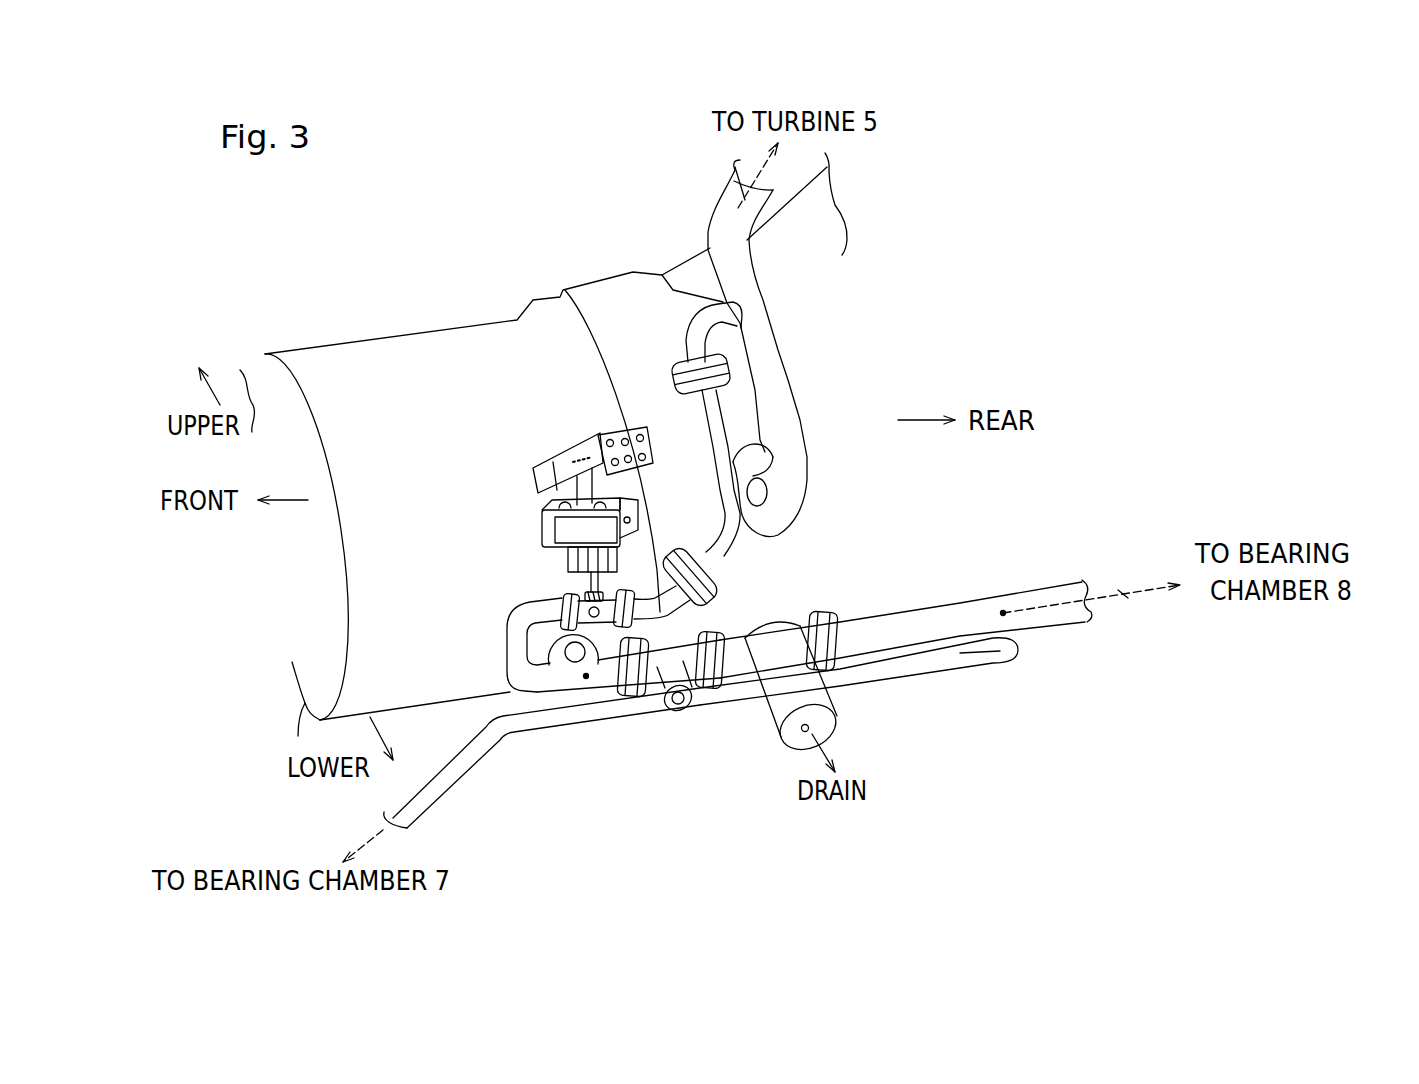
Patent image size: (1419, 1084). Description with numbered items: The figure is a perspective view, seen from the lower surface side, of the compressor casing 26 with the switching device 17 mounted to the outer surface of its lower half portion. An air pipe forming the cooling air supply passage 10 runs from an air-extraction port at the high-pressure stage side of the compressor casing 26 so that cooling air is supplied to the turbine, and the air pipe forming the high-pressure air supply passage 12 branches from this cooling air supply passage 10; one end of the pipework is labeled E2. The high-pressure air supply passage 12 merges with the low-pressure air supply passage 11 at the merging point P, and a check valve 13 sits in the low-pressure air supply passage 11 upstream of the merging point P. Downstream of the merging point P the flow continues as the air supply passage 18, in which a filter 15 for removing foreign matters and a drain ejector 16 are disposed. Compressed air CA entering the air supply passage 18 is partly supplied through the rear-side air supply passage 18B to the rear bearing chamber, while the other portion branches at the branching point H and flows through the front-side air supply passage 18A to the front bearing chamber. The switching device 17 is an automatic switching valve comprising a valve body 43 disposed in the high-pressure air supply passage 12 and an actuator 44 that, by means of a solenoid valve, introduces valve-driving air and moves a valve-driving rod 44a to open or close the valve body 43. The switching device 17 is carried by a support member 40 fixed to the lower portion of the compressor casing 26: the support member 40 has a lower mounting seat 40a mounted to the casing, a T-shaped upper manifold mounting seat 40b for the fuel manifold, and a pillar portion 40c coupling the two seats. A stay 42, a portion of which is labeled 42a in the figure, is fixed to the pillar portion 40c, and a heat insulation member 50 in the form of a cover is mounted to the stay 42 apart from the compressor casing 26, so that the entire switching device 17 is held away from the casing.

The cooling air supply passage 10 is at (803, 425).
The low-pressure air supply passage 11 is at (578, 660).
The high-pressure air supply passage 12 is at (721, 412).
The check valve 13 is at (558, 662).
The filter 15 is at (660, 689).
The drain ejector 16 is at (775, 702).
The switching device 17 is at (542, 514).
The air supply passage 18 is at (746, 722).
The front-side air supply passage 18A is at (443, 785).
The rear-side air supply passage 18B is at (1073, 614).
The compressor casing 26 is at (491, 358).
The support member 40 is at (550, 440).
The mounting seat 40a is at (535, 473).
The manifold mounting seat 40b is at (607, 441).
The pillar portion 40c is at (587, 447).
The stay 42 is at (572, 470).
The pin seat 42a is at (546, 530).
The valve body 43 is at (600, 622).
The actuator 44 is at (555, 551).
The valve-driving rod 44a is at (585, 588).
The heat insulation member 50 is at (535, 522).
The outlet end E2 is at (766, 533).
The merging point P is at (588, 680).
The branching point H is at (1003, 610).
The compressed air CA is at (734, 184).